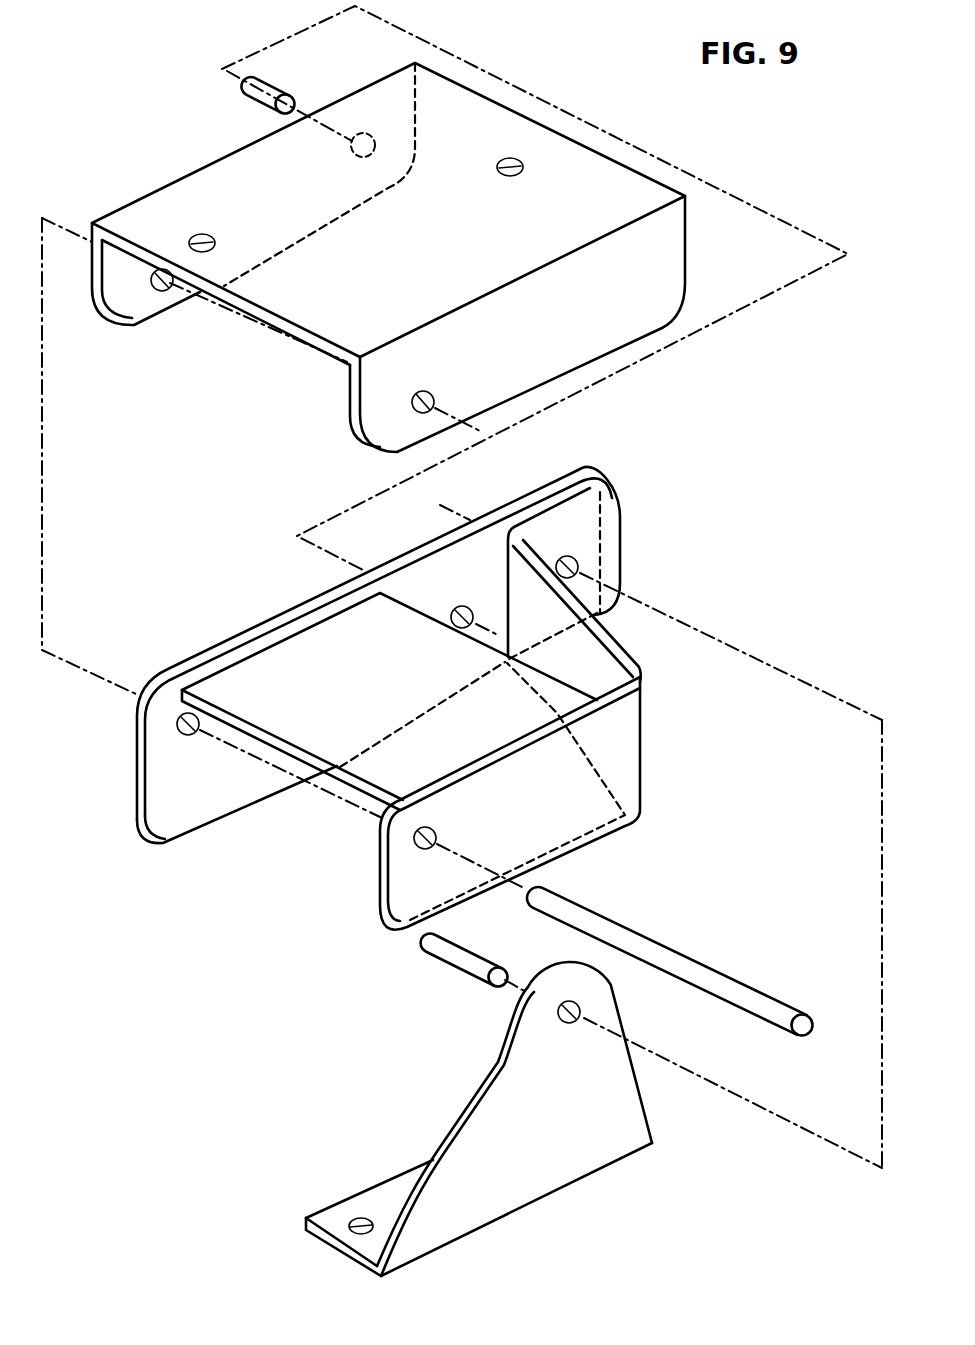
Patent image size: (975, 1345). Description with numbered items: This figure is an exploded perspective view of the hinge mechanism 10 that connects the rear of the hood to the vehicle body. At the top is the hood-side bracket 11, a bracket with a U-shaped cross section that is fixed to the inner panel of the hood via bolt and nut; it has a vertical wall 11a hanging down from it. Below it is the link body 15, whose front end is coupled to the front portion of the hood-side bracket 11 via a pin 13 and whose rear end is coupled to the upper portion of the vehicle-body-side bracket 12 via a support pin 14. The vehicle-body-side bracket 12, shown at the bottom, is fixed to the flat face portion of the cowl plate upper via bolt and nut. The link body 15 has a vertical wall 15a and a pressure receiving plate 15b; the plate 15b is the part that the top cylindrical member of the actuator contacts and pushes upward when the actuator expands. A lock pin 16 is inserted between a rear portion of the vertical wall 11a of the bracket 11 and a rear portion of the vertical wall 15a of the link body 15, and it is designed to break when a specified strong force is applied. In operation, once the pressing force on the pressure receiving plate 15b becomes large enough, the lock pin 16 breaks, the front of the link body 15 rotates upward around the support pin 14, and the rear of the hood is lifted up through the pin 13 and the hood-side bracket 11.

The hinge mechanism 10 is at (100, 76).
The hood-side bracket 11 is at (229, 125).
The vertical wall 11a is at (148, 302).
The vehicle-body-side bracket 12 is at (434, 1102).
The pin 13 is at (718, 977).
The support pin 14 is at (472, 969).
The link body 15 is at (492, 698).
The vertical wall 15a is at (155, 818).
The pressure receiving plate 15b is at (300, 673).
The lock pin 16 is at (275, 82).